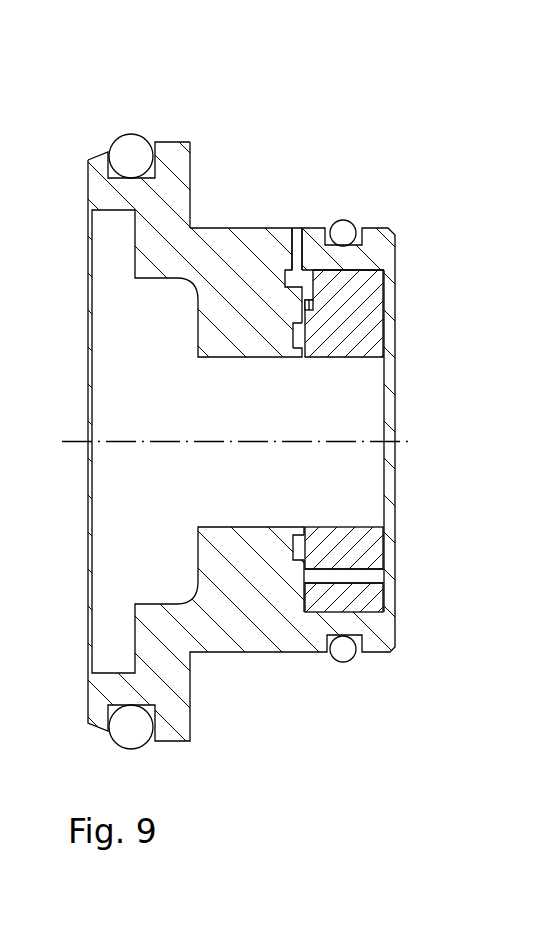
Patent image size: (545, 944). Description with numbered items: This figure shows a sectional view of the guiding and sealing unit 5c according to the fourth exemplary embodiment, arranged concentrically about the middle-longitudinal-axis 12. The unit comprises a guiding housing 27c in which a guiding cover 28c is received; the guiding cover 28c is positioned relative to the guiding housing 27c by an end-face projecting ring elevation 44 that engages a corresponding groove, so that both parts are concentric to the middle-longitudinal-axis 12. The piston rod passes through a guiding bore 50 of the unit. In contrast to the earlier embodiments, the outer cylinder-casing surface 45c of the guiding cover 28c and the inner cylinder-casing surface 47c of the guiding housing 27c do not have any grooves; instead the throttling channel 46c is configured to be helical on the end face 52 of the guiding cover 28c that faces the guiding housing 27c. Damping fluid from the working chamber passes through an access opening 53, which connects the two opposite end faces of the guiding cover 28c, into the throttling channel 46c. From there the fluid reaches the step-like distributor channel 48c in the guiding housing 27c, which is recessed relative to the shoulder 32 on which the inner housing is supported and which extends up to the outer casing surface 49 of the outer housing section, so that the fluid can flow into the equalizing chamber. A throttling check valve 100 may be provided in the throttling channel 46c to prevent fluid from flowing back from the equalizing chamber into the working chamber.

The guiding and sealing unit 5c is at (330, 135).
The middle-longitudinal-axis 12 is at (405, 442).
The guiding housing 27c is at (178, 150).
The guiding cover 28c is at (350, 333).
The shoulder 32 is at (193, 188).
The ring elevation 44 is at (303, 335).
The outer cylinder-casing surface 45c is at (378, 252).
The throttling channel 46c is at (312, 304).
The inner cylinder-casing surface 47c is at (373, 611).
The distributor channel 48c is at (297, 232).
The outer casing surface 49 is at (165, 140).
The guiding bore 50 is at (389, 414).
The end face 52 is at (295, 545).
The access opening 53 is at (373, 578).
The throttling check valve 100 is at (338, 262).